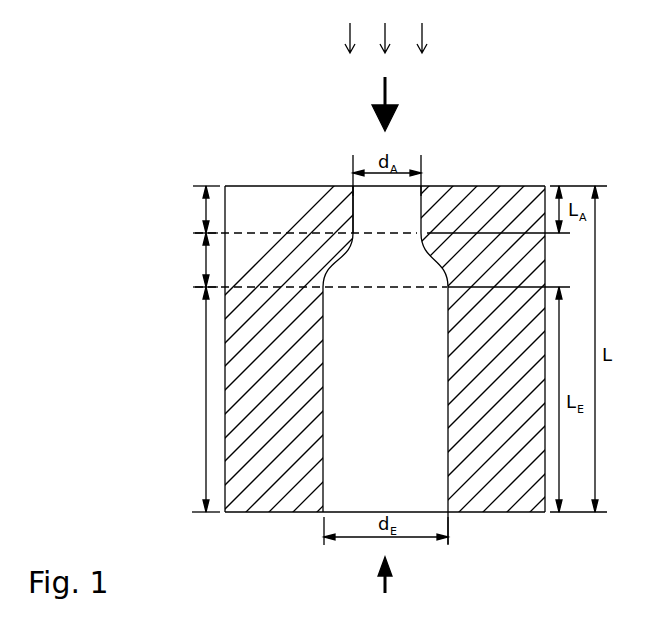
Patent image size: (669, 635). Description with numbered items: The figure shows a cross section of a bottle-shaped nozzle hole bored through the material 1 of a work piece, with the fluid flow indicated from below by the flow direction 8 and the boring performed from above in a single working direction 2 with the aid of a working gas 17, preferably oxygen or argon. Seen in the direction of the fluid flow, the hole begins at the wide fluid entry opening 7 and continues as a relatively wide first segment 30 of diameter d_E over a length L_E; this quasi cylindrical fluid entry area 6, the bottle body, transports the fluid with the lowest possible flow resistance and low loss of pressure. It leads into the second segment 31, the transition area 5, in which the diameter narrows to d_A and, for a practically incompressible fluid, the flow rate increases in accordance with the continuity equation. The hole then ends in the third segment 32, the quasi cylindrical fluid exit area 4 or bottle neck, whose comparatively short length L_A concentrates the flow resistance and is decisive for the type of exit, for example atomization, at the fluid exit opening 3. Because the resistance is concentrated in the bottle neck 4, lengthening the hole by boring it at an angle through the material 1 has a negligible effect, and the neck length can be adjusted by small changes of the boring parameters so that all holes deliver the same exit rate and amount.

The material 1 is at (473, 206).
The working direction 2 is at (389, 88).
The fluid exit opening 3 is at (410, 186).
The fluid exit area 4 is at (363, 214).
The transition area 5 is at (356, 268).
The fluid entry area 6 is at (343, 328).
The fluid entry opening 7 is at (427, 512).
The gas flow 8 is at (388, 580).
The working gas 17 is at (424, 34).
The first segment 30 is at (198, 407).
The second segment 31 is at (198, 262).
The third segment 32 is at (198, 212).